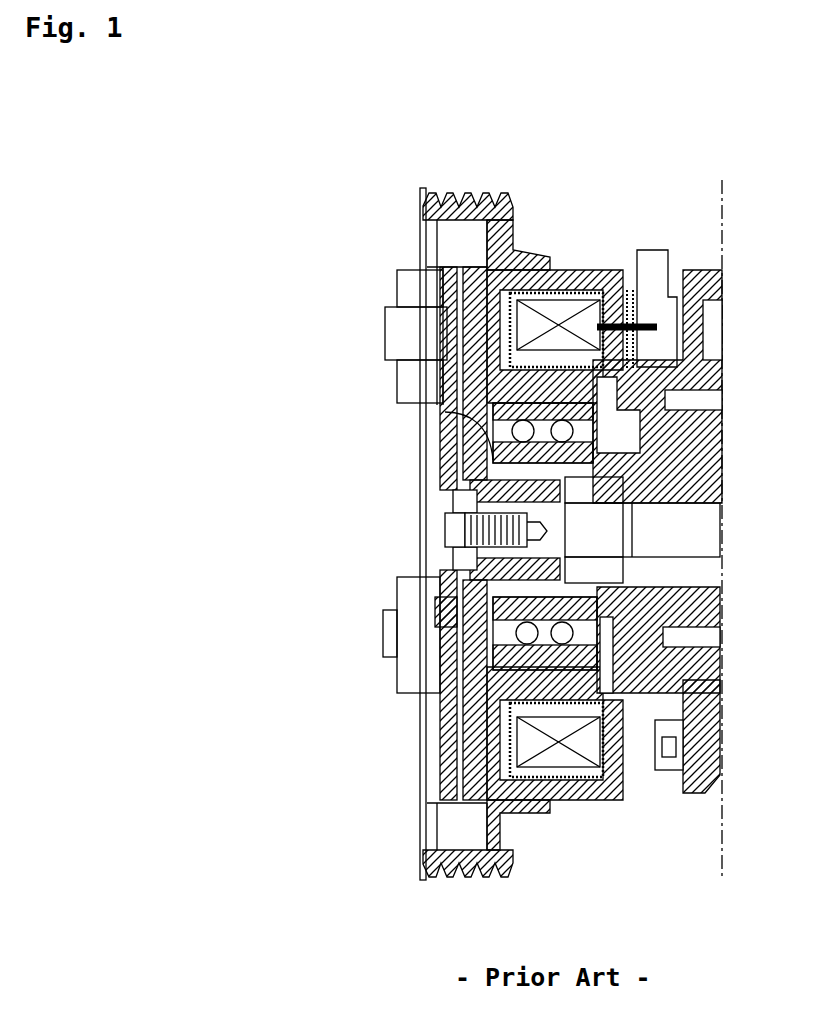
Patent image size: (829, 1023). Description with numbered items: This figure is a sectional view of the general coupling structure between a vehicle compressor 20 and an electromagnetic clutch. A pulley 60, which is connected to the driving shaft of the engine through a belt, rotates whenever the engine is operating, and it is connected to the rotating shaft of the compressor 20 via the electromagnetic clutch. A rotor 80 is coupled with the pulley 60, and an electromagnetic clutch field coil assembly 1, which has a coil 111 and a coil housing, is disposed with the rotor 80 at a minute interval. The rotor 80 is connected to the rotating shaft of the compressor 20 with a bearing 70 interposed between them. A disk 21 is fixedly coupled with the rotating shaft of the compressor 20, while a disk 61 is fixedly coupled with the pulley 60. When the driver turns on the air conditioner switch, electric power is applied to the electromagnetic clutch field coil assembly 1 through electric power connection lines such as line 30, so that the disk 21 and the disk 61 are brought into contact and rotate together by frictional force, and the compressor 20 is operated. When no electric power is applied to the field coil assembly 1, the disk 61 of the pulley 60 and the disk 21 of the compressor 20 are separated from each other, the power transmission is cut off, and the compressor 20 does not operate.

The electromagnetic clutch field coil assembly 1 is at (500, 330).
The compressor 20 is at (718, 432).
The disk 21 is at (450, 257).
The electric power connection line 30 is at (647, 327).
The pulley 60 is at (472, 195).
The disk 61 is at (513, 233).
The bearing 70 is at (420, 412).
The rotor 80 is at (572, 288).
The coil 111 is at (560, 755).